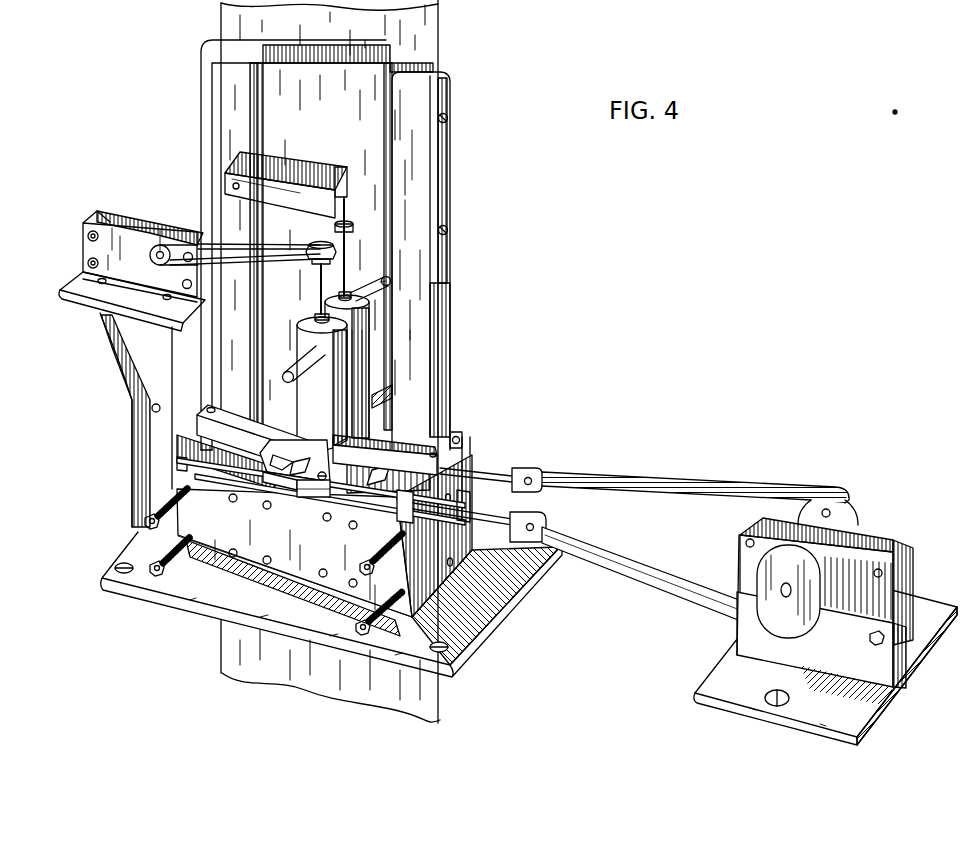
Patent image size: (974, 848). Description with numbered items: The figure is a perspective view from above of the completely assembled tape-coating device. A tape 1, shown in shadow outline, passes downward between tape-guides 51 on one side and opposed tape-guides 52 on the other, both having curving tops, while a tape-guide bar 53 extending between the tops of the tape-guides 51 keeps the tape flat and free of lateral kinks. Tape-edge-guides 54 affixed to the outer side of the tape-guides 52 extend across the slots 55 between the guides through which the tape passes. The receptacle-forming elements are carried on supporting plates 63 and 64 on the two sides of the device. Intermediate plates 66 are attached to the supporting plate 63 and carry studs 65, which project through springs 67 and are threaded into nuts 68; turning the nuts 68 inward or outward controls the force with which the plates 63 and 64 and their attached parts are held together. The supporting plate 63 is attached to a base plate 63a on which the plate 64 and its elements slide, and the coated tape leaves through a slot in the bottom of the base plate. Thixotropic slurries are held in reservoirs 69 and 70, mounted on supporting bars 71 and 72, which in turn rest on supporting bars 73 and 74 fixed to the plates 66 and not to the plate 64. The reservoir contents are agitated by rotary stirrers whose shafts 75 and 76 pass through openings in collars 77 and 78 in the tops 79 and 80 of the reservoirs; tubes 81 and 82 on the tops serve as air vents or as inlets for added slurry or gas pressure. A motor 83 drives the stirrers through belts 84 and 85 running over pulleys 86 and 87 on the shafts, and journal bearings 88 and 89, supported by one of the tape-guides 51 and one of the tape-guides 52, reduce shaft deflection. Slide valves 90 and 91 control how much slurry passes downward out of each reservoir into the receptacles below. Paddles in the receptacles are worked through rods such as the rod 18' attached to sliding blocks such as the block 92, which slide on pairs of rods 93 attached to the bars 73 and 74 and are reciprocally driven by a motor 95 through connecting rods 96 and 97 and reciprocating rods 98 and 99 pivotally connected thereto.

The tape 1 is at (426, 38).
The tape-guides 51 is at (265, 110).
The tape-guides 52 is at (212, 75).
The tape-guide bar 53 is at (330, 62).
The tape-edge-guides 54 is at (205, 113).
The slots 55 is at (260, 160).
The supporting plate 63 is at (470, 493).
The base plate 63a is at (505, 585).
The supporting plate 64 is at (212, 560).
The studs 65 is at (362, 628).
The intermediate plates 66 is at (470, 625).
The springs 67 is at (385, 637).
The nuts 68 is at (376, 632).
The reservoir 69 is at (368, 342).
The reservoir 70 is at (350, 365).
The supporting bar 71 is at (456, 436).
The supporting bar 72 is at (415, 460).
The supporting bar 73 is at (470, 452).
The supporting bar 74 is at (175, 462).
The stirrer shaft 75 is at (345, 248).
The stirrer shaft 76 is at (338, 256).
The collar 77 is at (353, 292).
The collar 78 is at (316, 320).
The reservoir top 79 is at (362, 302).
The reservoir top 80 is at (297, 340).
The tube 81 is at (390, 283).
The tube 82 is at (305, 372).
The motor 83 is at (88, 246).
The belt 84 is at (308, 240).
The belt 85 is at (243, 264).
The pulley 86 is at (347, 228).
The pulley 87 is at (318, 258).
The journal bearing 88 is at (348, 174).
The journal bearing 89 is at (318, 168).
The slide valve 90 is at (385, 400).
The slide valve 91 is at (282, 490).
The sliding block 92 is at (312, 503).
The pair of rods 93 is at (228, 482).
The motor 95 is at (876, 586).
The connecting rod 96 is at (700, 484).
The connecting rod 97 is at (660, 569).
The reciprocating rod 98 is at (515, 474).
The reciprocating rod 99 is at (478, 516).
The rod 18' is at (340, 519).